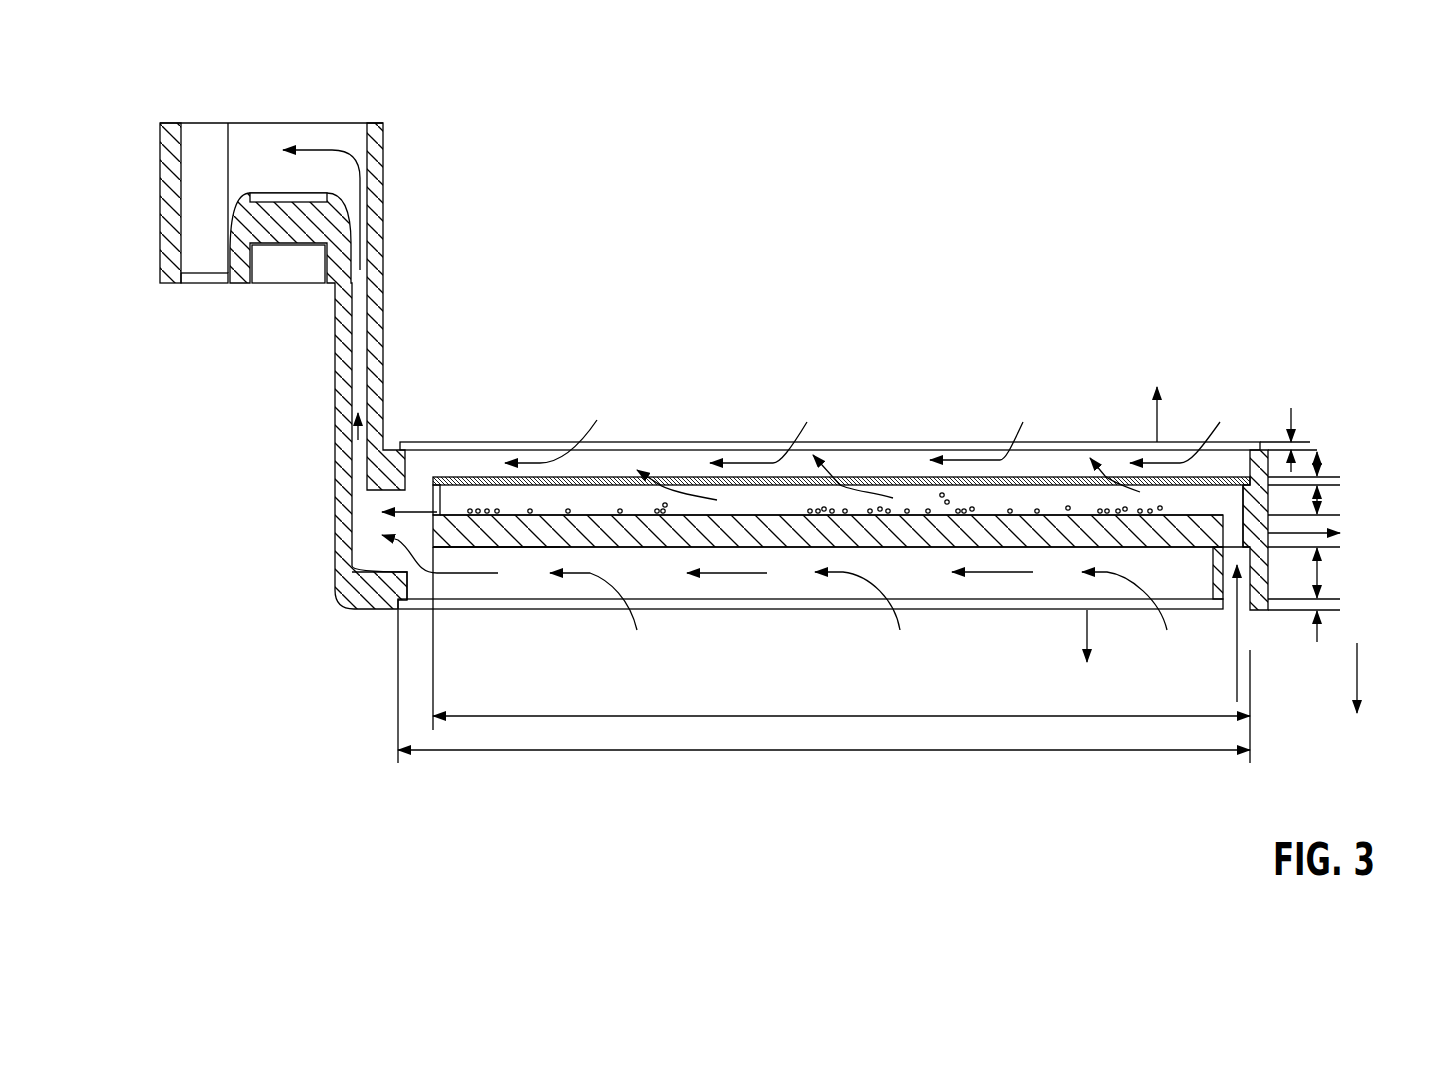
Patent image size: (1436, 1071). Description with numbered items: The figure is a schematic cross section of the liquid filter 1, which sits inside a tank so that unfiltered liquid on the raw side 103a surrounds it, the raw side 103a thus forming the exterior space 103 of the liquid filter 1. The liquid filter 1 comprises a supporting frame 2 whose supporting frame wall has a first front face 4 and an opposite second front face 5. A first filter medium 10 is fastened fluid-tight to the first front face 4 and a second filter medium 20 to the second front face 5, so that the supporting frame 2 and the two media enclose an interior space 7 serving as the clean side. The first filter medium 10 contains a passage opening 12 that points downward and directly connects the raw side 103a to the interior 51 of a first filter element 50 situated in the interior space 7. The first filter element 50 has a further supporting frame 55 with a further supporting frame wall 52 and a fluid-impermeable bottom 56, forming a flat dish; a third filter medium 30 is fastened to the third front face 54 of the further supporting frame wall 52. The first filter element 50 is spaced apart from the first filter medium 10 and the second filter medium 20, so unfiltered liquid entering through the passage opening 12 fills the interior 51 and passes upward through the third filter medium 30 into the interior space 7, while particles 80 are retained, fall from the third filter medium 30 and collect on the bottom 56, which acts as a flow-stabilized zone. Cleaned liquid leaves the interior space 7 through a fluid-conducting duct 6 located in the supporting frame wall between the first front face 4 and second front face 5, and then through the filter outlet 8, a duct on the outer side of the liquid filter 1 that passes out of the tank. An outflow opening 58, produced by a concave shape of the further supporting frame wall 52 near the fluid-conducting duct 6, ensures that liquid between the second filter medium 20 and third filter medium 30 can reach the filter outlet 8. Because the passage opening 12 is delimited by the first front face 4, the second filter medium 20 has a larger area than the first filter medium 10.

The liquid filter 1 is at (1200, 347).
The supporting frame 2 is at (1255, 502).
The first front face 4 is at (1217, 610).
The second front face 5 is at (1257, 447).
The fluid-conducting duct 6 is at (370, 548).
The interior space 7 is at (680, 460).
The filter outlet 8 is at (347, 452).
The first filter medium 10 is at (1001, 609).
The passage opening 12 is at (1240, 610).
The second filter medium 20 is at (973, 445).
The third filter medium 30 is at (1020, 478).
The first filter element 50 is at (783, 548).
The interior 51 is at (707, 493).
The further supporting frame wall 52 is at (437, 512).
The third front face 54 is at (441, 505).
The further supporting frame 55 is at (642, 548).
The bottom 56 is at (513, 548).
The outflow opening 58 is at (413, 487).
The particles 80 is at (498, 512).
The exterior space 103 is at (750, 248).
The raw side 103a is at (885, 248).